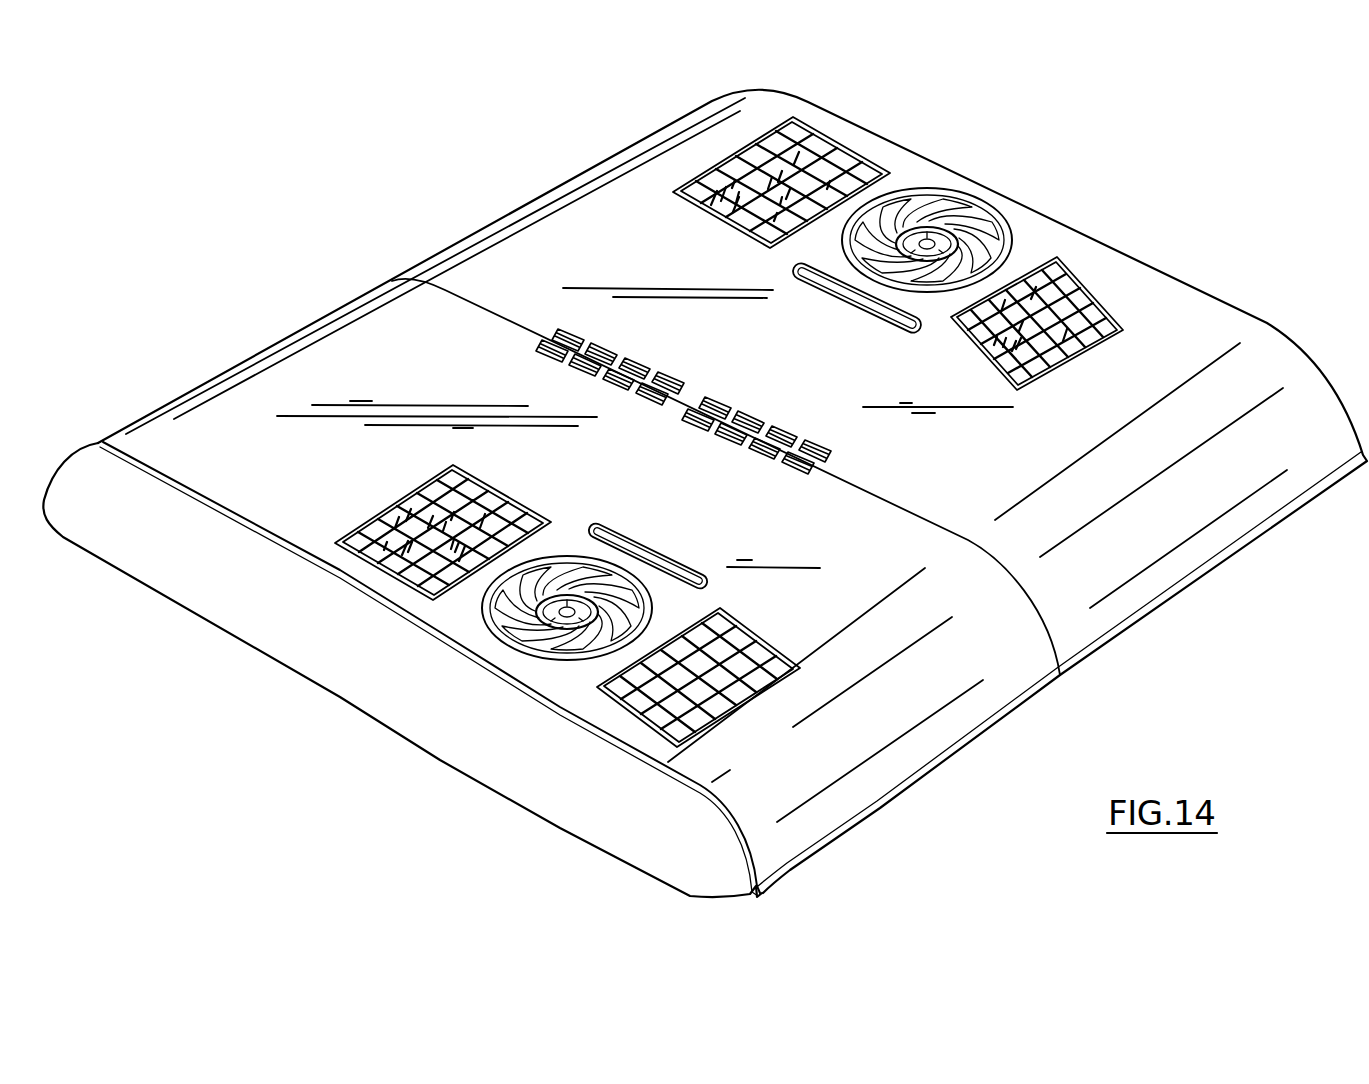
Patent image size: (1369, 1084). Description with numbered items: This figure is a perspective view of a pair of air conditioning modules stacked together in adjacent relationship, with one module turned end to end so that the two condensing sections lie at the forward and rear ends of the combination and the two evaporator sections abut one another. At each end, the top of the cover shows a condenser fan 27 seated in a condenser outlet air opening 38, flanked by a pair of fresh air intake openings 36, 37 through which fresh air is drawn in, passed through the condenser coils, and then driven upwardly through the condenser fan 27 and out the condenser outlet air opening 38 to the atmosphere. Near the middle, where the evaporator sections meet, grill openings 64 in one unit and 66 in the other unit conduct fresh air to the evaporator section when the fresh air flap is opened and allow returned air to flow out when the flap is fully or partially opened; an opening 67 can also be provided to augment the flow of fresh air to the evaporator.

The condenser fan 27 is at (947, 215).
The fresh air intake opening 36 is at (1083, 310).
The fresh air intake opening 37 is at (830, 142).
The condenser outlet air opening 38 is at (950, 186).
The grill opening 64 is at (668, 382).
The grill opening 66 is at (703, 422).
The opening 67 is at (670, 572).